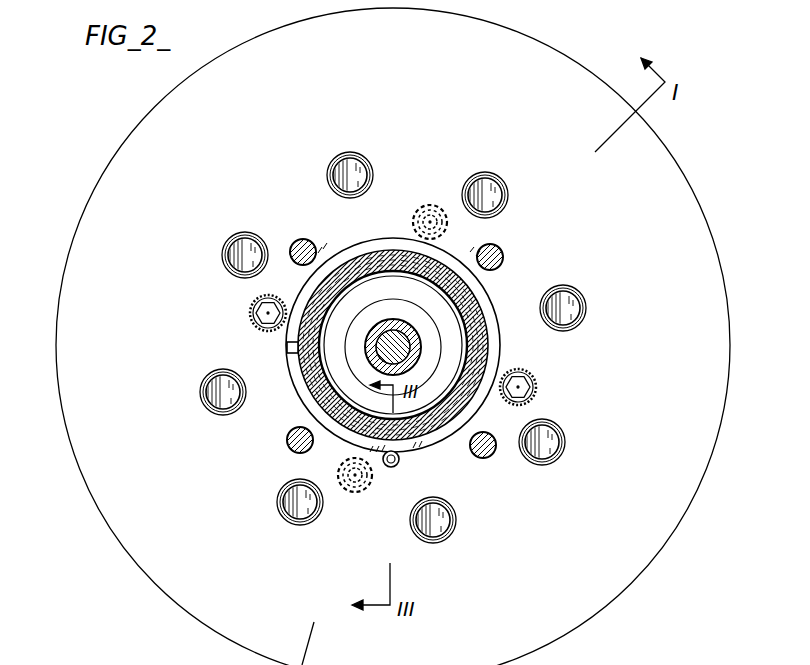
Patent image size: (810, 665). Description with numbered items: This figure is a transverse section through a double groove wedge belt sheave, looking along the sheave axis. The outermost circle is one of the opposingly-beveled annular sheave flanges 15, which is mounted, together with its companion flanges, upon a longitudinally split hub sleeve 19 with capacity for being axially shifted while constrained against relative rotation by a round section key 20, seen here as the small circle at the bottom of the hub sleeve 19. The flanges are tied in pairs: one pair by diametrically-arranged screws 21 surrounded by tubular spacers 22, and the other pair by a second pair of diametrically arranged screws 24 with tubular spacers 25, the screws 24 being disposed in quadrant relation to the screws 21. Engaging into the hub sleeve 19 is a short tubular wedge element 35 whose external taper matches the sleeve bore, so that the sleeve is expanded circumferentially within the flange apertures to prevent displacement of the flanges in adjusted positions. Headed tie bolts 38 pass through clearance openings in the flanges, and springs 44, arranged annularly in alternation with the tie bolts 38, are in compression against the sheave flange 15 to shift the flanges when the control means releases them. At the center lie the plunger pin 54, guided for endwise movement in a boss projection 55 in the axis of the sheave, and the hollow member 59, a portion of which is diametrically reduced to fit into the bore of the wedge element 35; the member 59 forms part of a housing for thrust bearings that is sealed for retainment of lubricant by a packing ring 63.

The sheave flange 15 is at (553, 65).
The hub sleeve 19 is at (386, 246).
The round section key 20 is at (391, 467).
The screw 21 is at (425, 206).
The tubular spacer 22 is at (435, 206).
The screw 24 is at (251, 306).
The tubular spacer 25 is at (250, 316).
The wedge element 35 is at (477, 292).
The tie bolt 38 is at (308, 239).
The spring 44 is at (327, 180).
The plunger pin 54 is at (382, 328).
The boss projection 55 is at (412, 322).
The hollow member 59 is at (458, 340).
The packing ring 63 is at (430, 350).